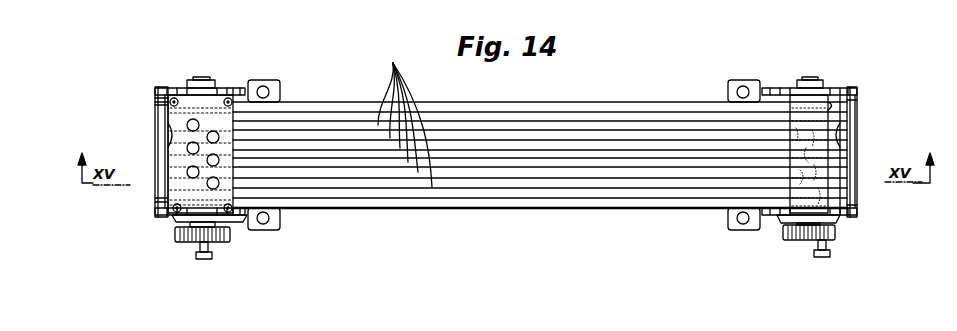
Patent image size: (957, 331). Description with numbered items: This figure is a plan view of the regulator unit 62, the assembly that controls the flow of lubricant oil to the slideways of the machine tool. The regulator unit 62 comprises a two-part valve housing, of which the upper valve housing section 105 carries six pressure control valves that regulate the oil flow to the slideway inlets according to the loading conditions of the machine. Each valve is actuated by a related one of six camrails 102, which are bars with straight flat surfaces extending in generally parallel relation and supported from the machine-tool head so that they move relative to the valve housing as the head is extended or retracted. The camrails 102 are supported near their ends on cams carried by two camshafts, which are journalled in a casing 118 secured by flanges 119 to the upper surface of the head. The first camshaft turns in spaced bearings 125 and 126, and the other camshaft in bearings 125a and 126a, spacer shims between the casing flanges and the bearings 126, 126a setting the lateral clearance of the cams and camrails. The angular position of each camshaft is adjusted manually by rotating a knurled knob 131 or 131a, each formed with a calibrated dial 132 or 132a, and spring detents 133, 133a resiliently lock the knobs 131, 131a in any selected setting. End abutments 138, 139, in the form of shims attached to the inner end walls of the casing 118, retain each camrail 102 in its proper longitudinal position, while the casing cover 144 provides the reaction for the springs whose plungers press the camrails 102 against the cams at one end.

The regulator unit 62 is at (595, 94).
The camrails 102 is at (405, 117).
The upper valve housing section 105 is at (192, 108).
The casing 118 is at (318, 108).
The flanges 119 is at (265, 83).
The bearing 125 is at (158, 212).
The bearing 125a is at (857, 210).
The bearing 126 is at (158, 90).
The bearing 126a is at (838, 93).
The knurled knob 131 is at (177, 235).
The knurled knob 131a is at (837, 230).
The calibrated dial 132 is at (172, 223).
The calibrated dial 132a is at (782, 222).
The spring detent 133 is at (197, 252).
The spring detent 133a is at (830, 250).
The end abutment 138 is at (167, 123).
The end abutment 139 is at (858, 88).
The casing cover 144 is at (797, 102).